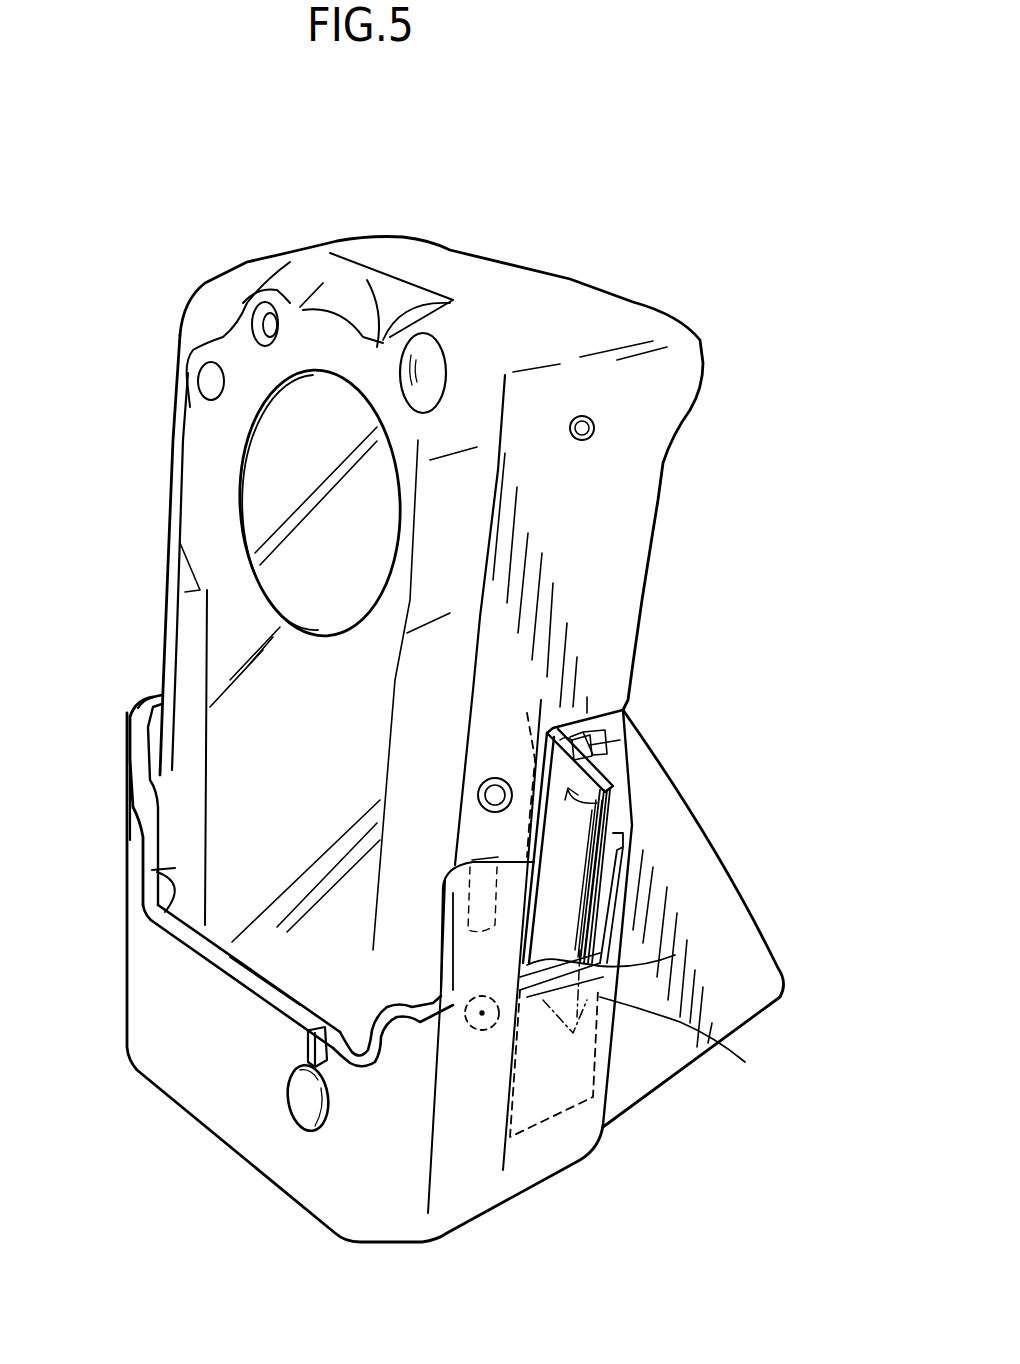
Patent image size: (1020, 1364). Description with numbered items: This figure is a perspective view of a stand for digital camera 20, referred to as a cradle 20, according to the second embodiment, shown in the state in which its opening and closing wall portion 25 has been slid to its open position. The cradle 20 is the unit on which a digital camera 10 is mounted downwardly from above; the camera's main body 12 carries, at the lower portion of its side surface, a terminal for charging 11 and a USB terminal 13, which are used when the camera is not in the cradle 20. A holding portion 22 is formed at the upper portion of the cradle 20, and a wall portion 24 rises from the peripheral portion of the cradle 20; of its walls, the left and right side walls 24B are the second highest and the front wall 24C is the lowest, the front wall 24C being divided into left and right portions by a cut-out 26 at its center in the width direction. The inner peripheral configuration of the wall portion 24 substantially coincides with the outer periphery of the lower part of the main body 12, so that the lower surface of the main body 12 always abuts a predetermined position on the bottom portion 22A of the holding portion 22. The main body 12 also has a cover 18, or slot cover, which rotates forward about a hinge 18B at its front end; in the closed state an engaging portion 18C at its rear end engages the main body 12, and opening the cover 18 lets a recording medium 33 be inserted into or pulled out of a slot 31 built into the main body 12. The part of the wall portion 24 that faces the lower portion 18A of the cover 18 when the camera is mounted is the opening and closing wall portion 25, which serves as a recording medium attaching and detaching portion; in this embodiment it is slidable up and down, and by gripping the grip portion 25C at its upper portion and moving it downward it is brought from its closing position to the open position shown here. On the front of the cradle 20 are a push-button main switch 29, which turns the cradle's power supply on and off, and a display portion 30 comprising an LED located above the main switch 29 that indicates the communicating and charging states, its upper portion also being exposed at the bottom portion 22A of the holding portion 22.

The digital camera 10 is at (573, 250).
The terminal for charging 11 is at (480, 1030).
The main body 12 is at (634, 303).
The USB terminal 13 is at (485, 860).
The cover 18 is at (620, 803).
The lower portion 18A is at (698, 1048).
The hinge 18B is at (527, 713).
The engaging portion 18C is at (625, 825).
The stand for digital camera 20 is at (190, 1130).
The holding portion 22 is at (197, 945).
The bottom portion 22A is at (258, 983).
The wall portion 24 is at (125, 768).
The side walls 24B is at (150, 695).
The front wall 24C is at (135, 840).
The opening and closing wall portion 25 is at (582, 1068).
The grip portion 25C is at (675, 955).
The cut-out 26 is at (143, 903).
The main switch 29 is at (303, 1117).
The display portion 30 is at (322, 1058).
The slot 31 is at (622, 735).
The recording medium 33 is at (622, 758).